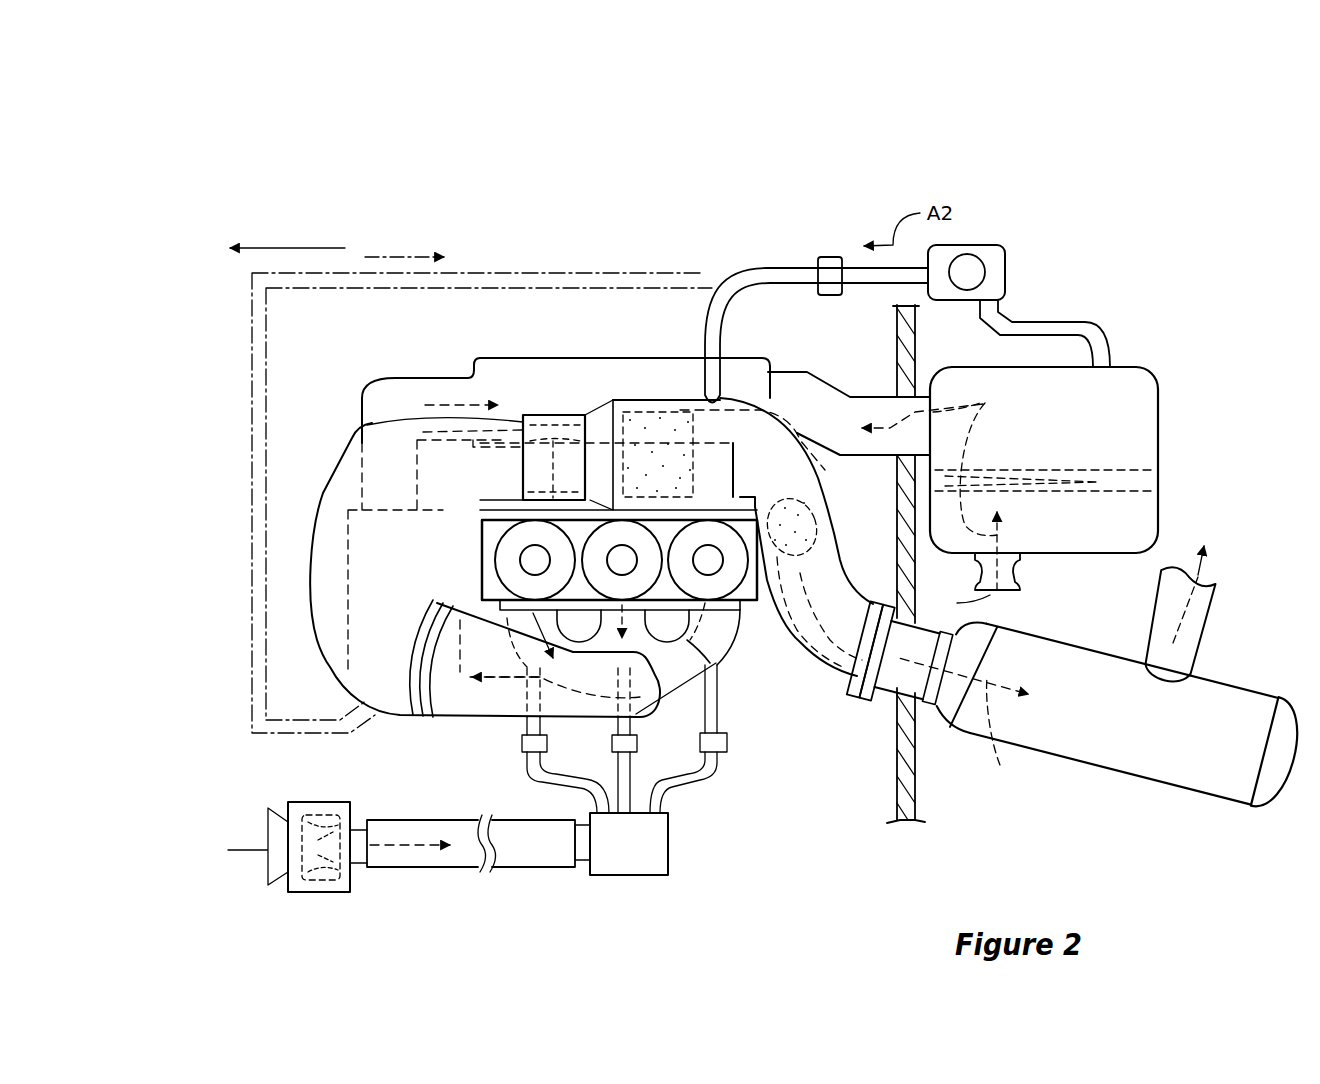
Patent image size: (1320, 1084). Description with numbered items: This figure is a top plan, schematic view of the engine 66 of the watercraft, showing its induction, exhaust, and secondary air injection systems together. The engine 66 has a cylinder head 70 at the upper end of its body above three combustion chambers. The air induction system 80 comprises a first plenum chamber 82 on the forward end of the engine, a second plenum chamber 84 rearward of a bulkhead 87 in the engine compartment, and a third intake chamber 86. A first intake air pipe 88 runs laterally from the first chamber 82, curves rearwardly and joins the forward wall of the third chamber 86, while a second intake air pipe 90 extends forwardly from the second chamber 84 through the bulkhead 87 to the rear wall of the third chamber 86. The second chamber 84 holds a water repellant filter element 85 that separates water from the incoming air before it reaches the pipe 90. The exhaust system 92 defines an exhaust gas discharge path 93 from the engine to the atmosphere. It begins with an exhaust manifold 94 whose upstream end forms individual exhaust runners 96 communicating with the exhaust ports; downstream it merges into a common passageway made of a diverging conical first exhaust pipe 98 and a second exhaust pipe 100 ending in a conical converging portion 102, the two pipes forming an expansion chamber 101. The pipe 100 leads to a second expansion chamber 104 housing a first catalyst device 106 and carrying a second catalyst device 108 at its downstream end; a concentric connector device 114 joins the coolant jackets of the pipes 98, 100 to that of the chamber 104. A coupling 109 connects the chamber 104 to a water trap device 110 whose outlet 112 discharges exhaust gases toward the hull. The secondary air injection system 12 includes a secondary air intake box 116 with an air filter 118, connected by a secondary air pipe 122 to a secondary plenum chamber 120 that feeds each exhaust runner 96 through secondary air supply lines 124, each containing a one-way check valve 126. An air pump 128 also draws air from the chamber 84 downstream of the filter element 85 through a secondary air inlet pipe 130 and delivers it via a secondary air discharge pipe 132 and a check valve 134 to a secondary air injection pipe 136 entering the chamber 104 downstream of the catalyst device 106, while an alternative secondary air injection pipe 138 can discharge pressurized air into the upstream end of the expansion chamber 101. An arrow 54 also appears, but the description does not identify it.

The secondary air injection system 12 is at (1088, 170).
The forward direction 54 is at (272, 248).
The engine 66 is at (1214, 341).
The cylinder head 70 is at (510, 575).
The air induction system 80 is at (630, 352).
The first plenum chamber 82 is at (405, 705).
The second plenum chamber 84 is at (1143, 414).
The water repellant filter element 85 is at (1095, 489).
The third intake chamber 86 is at (537, 378).
The bulkhead 87 is at (923, 810).
The first intake air pipe 88 is at (393, 380).
The second intake air pipe 90 is at (787, 362).
The exhaust system 92 is at (290, 482).
The exhaust gas discharge path 93 is at (340, 608).
The exhaust manifold 94 is at (676, 704).
The exhaust runners 96 is at (722, 623).
The first exhaust pipe 98 is at (512, 705).
The second exhaust pipe 100 is at (325, 560).
The expansion chamber 101 is at (335, 452).
The conical converging portion 102 is at (400, 415).
The second expansion chamber 104 is at (653, 397).
The first catalyst device 106 is at (683, 400).
The second catalyst device 108 is at (826, 524).
The coupling 109 is at (867, 697).
The water trap device 110 is at (1168, 763).
The outlet 112 is at (1193, 613).
The concentric connector device 114 is at (540, 420).
The secondary air intake box 116 is at (325, 893).
The air filter 118 is at (326, 806).
The secondary plenum chamber 120 is at (635, 852).
The secondary air pipe 122 is at (542, 847).
The secondary air supply lines 124 is at (708, 778).
The one-way check valve 126 is at (727, 742).
The air pump 128 is at (990, 268).
The secondary air inlet pipe 130 is at (1047, 340).
The secondary air discharge pipe 132 is at (865, 287).
The check valve 134 is at (830, 262).
The secondary air injection pipe 136 is at (793, 277).
The secondary air injection pipe 138 is at (500, 273).